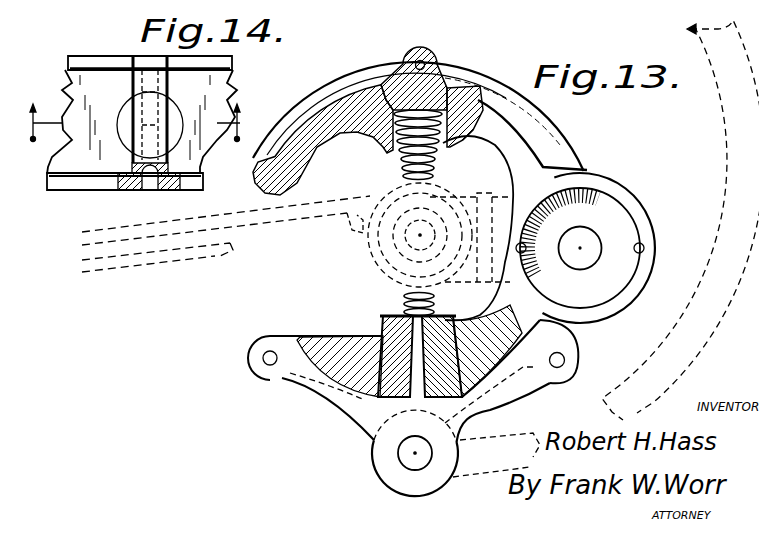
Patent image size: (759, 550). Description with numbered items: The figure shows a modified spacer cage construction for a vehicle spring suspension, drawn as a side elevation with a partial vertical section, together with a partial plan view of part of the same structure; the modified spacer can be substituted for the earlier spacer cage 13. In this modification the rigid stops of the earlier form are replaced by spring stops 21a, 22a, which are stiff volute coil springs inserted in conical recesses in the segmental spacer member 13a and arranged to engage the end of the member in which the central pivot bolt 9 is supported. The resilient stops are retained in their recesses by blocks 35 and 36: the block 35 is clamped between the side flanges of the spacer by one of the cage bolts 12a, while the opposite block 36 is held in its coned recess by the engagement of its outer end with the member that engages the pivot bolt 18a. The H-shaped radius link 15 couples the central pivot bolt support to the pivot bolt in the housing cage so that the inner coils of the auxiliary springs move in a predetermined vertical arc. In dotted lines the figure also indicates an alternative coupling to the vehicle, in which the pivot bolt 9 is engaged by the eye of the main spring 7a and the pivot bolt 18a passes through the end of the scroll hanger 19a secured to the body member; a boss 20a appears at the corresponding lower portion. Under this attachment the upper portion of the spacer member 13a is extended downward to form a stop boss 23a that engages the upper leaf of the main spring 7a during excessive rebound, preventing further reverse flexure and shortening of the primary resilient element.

In FIG. 13, the main spring 7a is at (214, 247).
In FIG. 13, the pivot bolt 9 is at (402, 239).
In FIG. 13, the cage bolt 12a is at (430, 57).
In FIG. 14, the spacer cage 13 is at (137, 123).
In FIG. 14, the spacer member 13a is at (102, 75).
In FIG. 13, the spacer member 13a is at (297, 307).
In FIG. 13, the radius link 15 is at (450, 268).
In FIG. 13, the pivot bolt 18a is at (398, 453).
In FIG. 13, the scroll hanger 19a is at (735, 131).
In FIG. 13, the hub boss 20a is at (402, 475).
In FIG. 13, the spring stop 21a is at (407, 307).
In FIG. 13, the spring stop 22a is at (400, 167).
In FIG. 13, the stop boss 23a is at (259, 181).
In FIG. 14, the block 35 is at (162, 82).
In FIG. 13, the block 35 is at (397, 80).
In FIG. 13, the block 36 is at (378, 398).